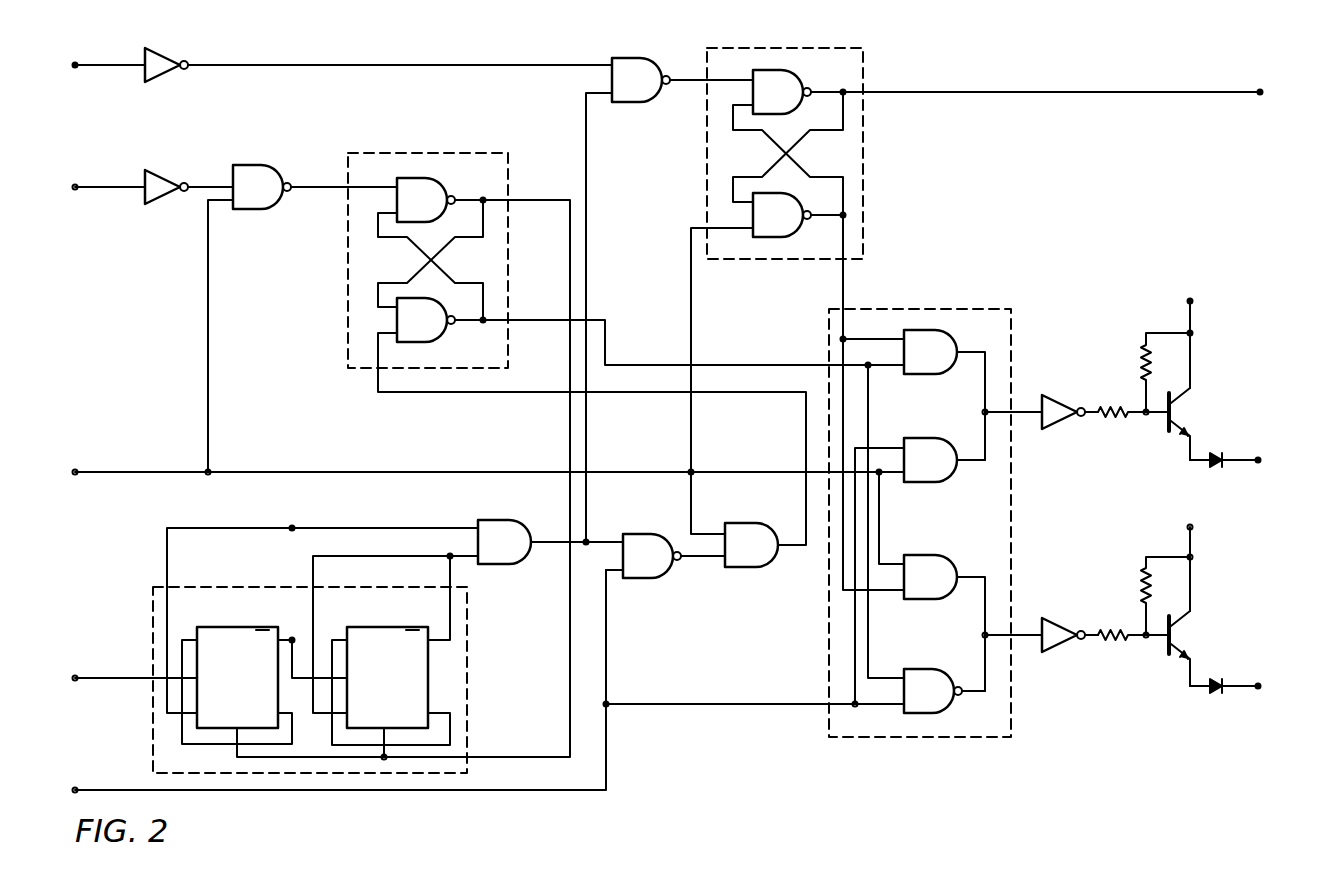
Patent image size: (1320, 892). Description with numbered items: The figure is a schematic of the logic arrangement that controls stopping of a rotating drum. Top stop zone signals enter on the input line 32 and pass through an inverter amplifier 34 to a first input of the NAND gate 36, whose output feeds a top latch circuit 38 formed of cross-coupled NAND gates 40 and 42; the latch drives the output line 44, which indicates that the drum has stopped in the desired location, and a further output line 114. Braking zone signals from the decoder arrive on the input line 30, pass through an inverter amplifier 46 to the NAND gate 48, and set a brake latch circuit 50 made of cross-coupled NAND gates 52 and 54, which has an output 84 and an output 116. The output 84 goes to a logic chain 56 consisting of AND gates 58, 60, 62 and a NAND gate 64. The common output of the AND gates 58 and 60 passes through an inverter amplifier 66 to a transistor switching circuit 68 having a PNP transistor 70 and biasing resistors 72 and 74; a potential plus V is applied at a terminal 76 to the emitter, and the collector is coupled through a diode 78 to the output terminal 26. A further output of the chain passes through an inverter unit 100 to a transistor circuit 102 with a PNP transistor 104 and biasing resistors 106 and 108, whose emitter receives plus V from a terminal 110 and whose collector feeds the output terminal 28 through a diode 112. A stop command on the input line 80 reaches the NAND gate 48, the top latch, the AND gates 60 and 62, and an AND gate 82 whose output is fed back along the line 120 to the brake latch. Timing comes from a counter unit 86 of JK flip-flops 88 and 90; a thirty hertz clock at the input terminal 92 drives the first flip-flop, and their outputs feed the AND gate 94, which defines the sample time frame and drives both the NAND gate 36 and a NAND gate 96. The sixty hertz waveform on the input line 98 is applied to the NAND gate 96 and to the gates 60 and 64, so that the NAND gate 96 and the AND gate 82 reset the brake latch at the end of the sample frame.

The output terminal 26 is at (1260, 458).
The output terminal 28 is at (1260, 684).
The input line 30 is at (77, 185).
The input line 32 is at (77, 63).
The inverter amplifier 34 is at (182, 58).
The NAND gate 36 is at (640, 58).
The top latch circuit 38 is at (815, 48).
The NAND gate 40 is at (800, 73).
The NAND gate 42 is at (780, 240).
The output line 44 is at (1060, 92).
The inverter amplifier 46 is at (182, 180).
The NAND gate 48 is at (280, 165).
The brake latch circuit 50 is at (455, 152).
The NAND gate 52 is at (445, 182).
The NAND gate 54 is at (435, 345).
The NAND gate logic chain 56 is at (960, 308).
The AND gate 58 is at (952, 336).
The AND gate 60 is at (948, 428).
The AND gate 62 is at (958, 544).
The NAND gate 64 is at (938, 670).
The inverter amplifier 66 is at (1048, 400).
The transistor switching circuit 68 is at (1160, 443).
The PNP transistor 70 is at (1175, 400).
The biasing resistor 72 is at (1140, 350).
The biasing resistor 74 is at (1102, 405).
The terminal 76 is at (1193, 302).
The diode 78 is at (1215, 452).
The input line 80 is at (77, 470).
The AND gate 82 is at (752, 522).
The output 84 is at (520, 320).
The counter unit 86 is at (468, 600).
The JK flip-flop 88 is at (232, 627).
The JK flip-flop 90 is at (382, 627).
The input terminal 92 is at (77, 676).
The AND gate 94 is at (505, 520).
The NAND gate 96 is at (638, 534).
The input line 98 is at (77, 788).
The inverter unit 100 is at (1048, 623).
The transistor circuit 102 is at (1160, 665).
The PNP transistor 104 is at (1175, 623).
The biasing resistor 106 is at (1140, 578).
The biasing resistor 108 is at (1102, 628).
The terminal 110 is at (1193, 527).
The diode 112 is at (1215, 678).
The output line 114 is at (845, 242).
The output 116 is at (525, 200).
The line 120 is at (806, 430).